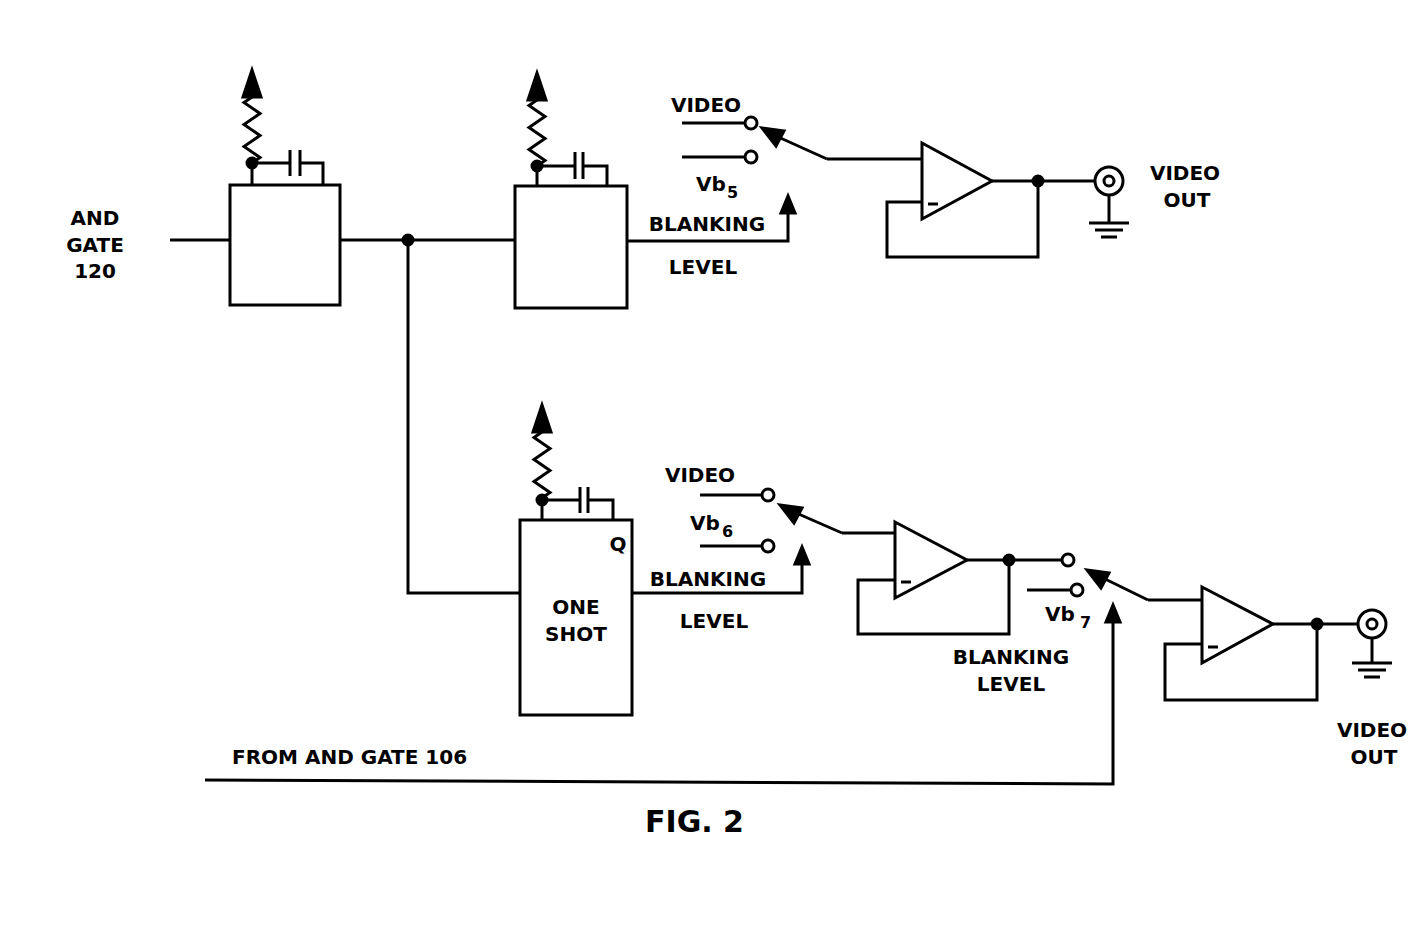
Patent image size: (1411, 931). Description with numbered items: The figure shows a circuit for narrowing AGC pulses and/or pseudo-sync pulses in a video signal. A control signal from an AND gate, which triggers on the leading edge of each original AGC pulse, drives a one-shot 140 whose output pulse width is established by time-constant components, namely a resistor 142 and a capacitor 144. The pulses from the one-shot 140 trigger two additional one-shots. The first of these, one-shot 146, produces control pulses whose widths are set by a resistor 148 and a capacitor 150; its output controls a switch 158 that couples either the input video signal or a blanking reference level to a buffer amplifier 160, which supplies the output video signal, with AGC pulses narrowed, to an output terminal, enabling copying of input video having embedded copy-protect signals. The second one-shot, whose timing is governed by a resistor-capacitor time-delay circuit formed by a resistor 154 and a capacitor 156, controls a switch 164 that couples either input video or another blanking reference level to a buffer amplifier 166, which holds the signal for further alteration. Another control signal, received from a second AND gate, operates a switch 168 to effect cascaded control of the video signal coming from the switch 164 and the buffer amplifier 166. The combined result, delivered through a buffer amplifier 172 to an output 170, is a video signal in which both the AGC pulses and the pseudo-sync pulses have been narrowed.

The one-shot 140 is at (230, 216).
The resistor 142 is at (246, 130).
The capacitor 144 is at (300, 150).
The one-shot 146 is at (515, 218).
The resistor 148 is at (532, 134).
The capacitor 150 is at (586, 152).
The resistor 154 is at (536, 467).
The capacitor 156 is at (591, 489).
The switch 158 is at (810, 146).
The buffer amplifier 160 is at (934, 150).
The switch 164 is at (1104, 167).
The buffer amplifier 166 is at (902, 532).
The switch 168 is at (1130, 584).
The output 170 is at (1365, 610).
The buffer amplifier 172 is at (1208, 590).